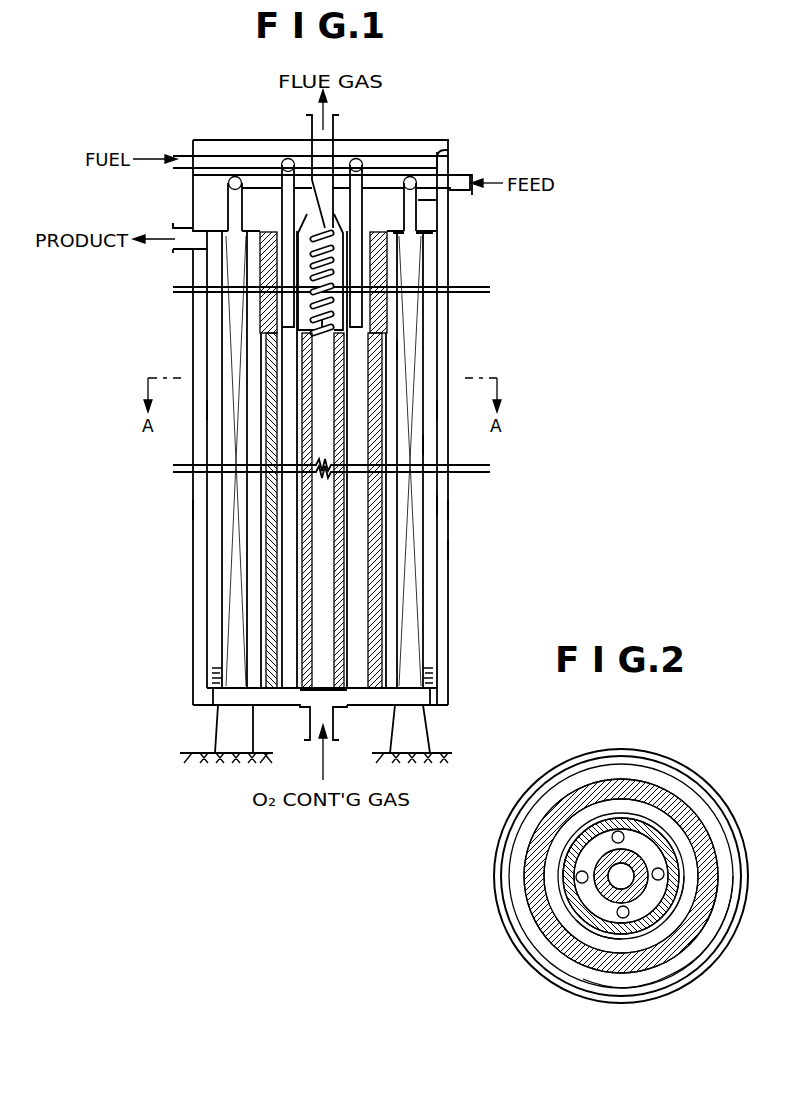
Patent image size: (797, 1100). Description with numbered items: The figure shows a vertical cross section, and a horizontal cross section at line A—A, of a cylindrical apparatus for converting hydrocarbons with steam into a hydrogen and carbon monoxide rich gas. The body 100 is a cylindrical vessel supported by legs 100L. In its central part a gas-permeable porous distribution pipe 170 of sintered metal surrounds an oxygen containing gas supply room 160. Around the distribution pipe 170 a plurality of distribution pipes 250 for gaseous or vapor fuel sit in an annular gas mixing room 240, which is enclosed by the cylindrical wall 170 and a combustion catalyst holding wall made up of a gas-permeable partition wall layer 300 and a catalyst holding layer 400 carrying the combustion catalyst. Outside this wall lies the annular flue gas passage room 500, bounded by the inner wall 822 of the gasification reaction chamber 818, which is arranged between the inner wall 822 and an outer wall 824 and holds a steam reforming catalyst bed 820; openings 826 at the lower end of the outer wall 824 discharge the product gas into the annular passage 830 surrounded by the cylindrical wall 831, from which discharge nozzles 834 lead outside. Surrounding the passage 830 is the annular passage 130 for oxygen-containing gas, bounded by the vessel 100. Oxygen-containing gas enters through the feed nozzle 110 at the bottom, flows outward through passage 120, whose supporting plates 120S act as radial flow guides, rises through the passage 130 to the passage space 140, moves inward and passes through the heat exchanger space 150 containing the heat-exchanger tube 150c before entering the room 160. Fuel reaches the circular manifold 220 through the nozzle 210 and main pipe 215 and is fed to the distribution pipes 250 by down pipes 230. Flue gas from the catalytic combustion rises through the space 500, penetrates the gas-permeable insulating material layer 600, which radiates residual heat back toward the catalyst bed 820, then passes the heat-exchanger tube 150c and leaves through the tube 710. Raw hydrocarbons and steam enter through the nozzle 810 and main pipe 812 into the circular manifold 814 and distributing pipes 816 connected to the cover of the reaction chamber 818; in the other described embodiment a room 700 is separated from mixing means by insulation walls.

In FIG. 1, the body 100 is at (193, 545).
In FIG. 2, the body 100 is at (633, 755).
In FIG. 1, the legs 100L is at (422, 727).
In FIG. 1, the feed nozzle 110 is at (338, 738).
In FIG. 1, the passage 120 is at (448, 700).
In FIG. 1, the supporting plates 120S is at (252, 697).
In FIG. 1, the passage for oxygen-containing gas 130 is at (200, 517).
In FIG. 2, the passage for oxygen-containing gas 130 is at (597, 757).
In FIG. 1, the passage space 140 is at (404, 169).
In FIG. 1, the heat exchanger space 150 is at (350, 260).
In FIG. 1, the heat-exchanger tube 150c is at (345, 278).
In FIG. 1, the oxygen containing gas supply room 160 is at (320, 570).
In FIG. 2, the oxygen containing gas supply room 160 is at (598, 895).
In FIG. 1, the distribution pipe 170 is at (303, 640).
In FIG. 2, the distribution pipe 170 is at (565, 935).
In FIG. 1, the nozzle 210 is at (178, 156).
In FIG. 1, the main pipe 215 is at (231, 152).
In FIG. 1, the circular manifold 220 is at (288, 158).
In FIG. 1, the down pipes 230 is at (281, 197).
In FIG. 1, the annular gas mixing room 240 is at (273, 690).
In FIG. 2, the annular gas mixing room 240 is at (618, 877).
In FIG. 1, the distribution pipes 250 is at (296, 364).
In FIG. 2, the distribution pipes 250 is at (585, 862).
In FIG. 1, the gas-permeable partition wall layer 300 is at (296, 488).
In FIG. 2, the gas-permeable partition wall layer 300 is at (664, 827).
In FIG. 1, the catalyst holding layer 400 is at (262, 455).
In FIG. 2, the catalyst holding layer 400 is at (690, 807).
In FIG. 1, the flue gas passage room 500 is at (252, 602).
In FIG. 2, the flue gas passage room 500 is at (717, 813).
In FIG. 1, the insulating material layer 600 is at (262, 318).
In FIG. 1, the room 700 is at (300, 268).
In FIG. 1, the tube 710 is at (337, 133).
In FIG. 1, the nozzle 810 is at (473, 172).
In FIG. 1, the main pipe 812 is at (438, 150).
In FIG. 1, the circular manifold 814 is at (412, 176).
In FIG. 1, the distributing pipes 816 is at (418, 202).
In FIG. 1, the gasification reaction chamber 818 is at (428, 218).
In FIG. 1, the steam reforming catalyst bed 820 is at (412, 363).
In FIG. 1, the inner wall 822 is at (397, 350).
In FIG. 2, the inner wall 822 is at (592, 972).
In FIG. 1, the outer wall 824 is at (430, 445).
In FIG. 2, the outer wall 824 is at (672, 973).
In FIG. 1, the openings 826 is at (210, 673).
In FIG. 1, the passage for product gas 830 is at (432, 508).
In FIG. 2, the passage for product gas 830 is at (695, 953).
In FIG. 1, the cylindrical wall 831 is at (450, 553).
In FIG. 2, the cylindrical wall 831 is at (720, 937).
In FIG. 1, the discharge nozzles 834 is at (173, 222).